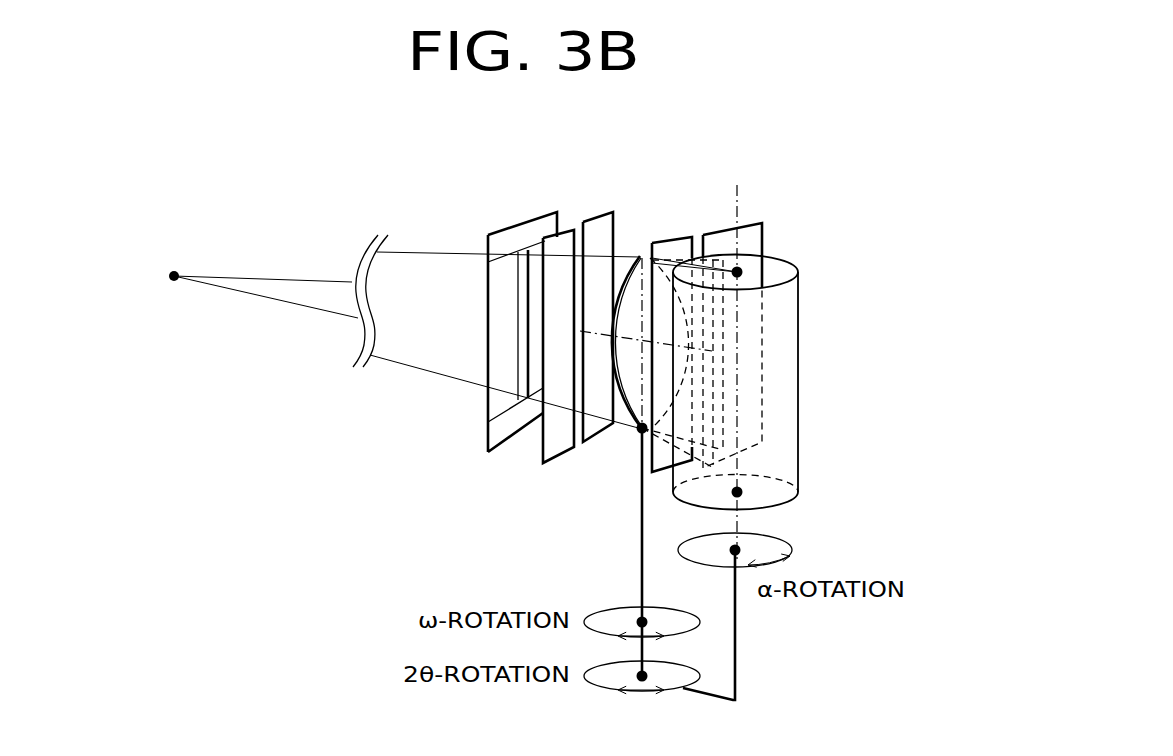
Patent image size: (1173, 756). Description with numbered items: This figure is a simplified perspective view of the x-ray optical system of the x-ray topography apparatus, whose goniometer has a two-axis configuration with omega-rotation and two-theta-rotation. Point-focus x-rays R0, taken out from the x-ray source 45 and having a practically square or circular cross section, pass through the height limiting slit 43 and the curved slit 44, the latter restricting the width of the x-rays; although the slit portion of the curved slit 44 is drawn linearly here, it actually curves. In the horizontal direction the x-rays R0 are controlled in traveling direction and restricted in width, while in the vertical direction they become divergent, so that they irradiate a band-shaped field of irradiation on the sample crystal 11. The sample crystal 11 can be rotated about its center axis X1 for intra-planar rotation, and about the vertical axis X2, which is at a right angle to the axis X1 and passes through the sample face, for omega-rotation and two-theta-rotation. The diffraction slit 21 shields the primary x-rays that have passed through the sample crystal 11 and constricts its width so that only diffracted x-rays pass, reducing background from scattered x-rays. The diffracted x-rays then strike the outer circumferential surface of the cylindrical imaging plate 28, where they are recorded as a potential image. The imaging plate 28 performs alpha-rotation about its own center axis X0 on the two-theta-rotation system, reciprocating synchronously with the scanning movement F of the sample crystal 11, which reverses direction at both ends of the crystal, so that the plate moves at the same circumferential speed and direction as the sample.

The x-ray source 45 is at (174, 283).
The point-focus x-rays R0 is at (290, 243).
The height limiting slit 43 is at (503, 242).
The curved slit 44 is at (568, 243).
The axis of intra-planar rotation X1 is at (593, 333).
The sample crystal 11 is at (636, 275).
The axis of ω-rotation and 2θ-rotation X2 is at (641, 466).
The diffraction slit 21 is at (757, 222).
The center axis of the rotation drum X0 is at (737, 358).
The imaging plate 28 is at (798, 411).
The scanning movement F is at (688, 521).